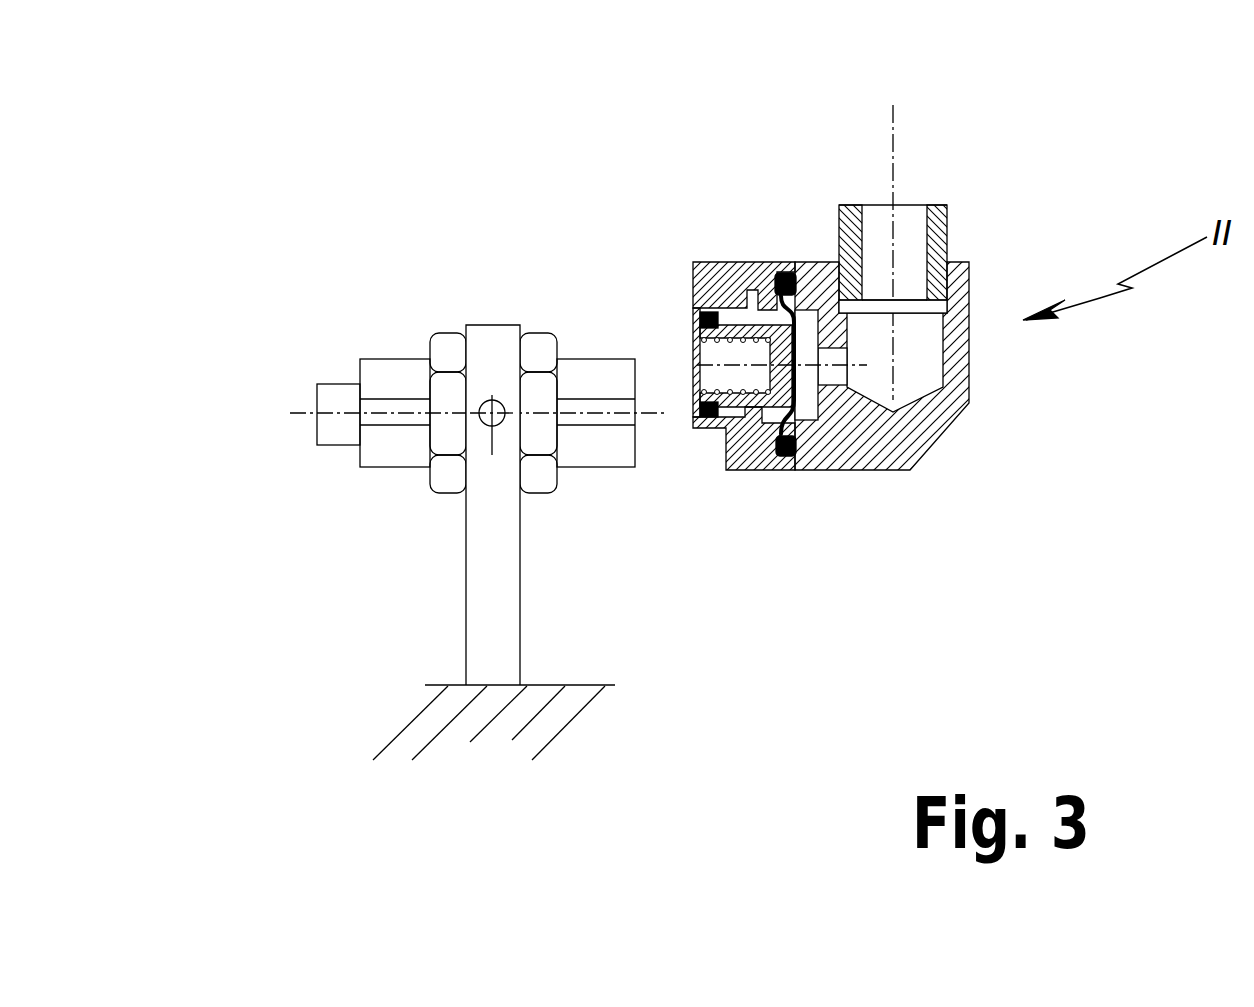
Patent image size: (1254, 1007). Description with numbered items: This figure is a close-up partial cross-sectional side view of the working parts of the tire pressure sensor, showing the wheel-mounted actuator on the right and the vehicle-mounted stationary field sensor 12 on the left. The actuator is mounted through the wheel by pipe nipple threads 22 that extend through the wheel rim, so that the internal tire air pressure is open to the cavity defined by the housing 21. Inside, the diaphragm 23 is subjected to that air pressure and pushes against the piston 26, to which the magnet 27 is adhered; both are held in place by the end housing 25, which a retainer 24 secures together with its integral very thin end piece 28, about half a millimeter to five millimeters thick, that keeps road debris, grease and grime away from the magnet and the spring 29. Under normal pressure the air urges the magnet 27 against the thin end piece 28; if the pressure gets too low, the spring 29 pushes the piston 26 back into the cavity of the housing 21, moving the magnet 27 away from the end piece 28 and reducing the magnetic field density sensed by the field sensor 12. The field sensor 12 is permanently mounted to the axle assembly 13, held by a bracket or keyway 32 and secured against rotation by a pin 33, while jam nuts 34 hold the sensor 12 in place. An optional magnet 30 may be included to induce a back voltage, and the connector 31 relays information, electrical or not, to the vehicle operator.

The stationary field sensor 12 is at (360, 372).
The axle assembly 13 is at (494, 731).
The housing 21 is at (962, 425).
The pipe nipple threads 22 is at (945, 220).
The diaphragm 23 is at (787, 276).
The retainer 24 is at (760, 472).
The end housing 25 is at (712, 262).
The piston 26 is at (730, 420).
The magnet 27 is at (697, 312).
The very thin end piece 28 is at (695, 355).
The spring 29 is at (767, 395).
The magnet 30 is at (585, 417).
The connector 31 is at (317, 437).
The bracket or keyway 32 is at (468, 585).
The pin 33 is at (491, 398).
The jam nuts 34 is at (432, 487).